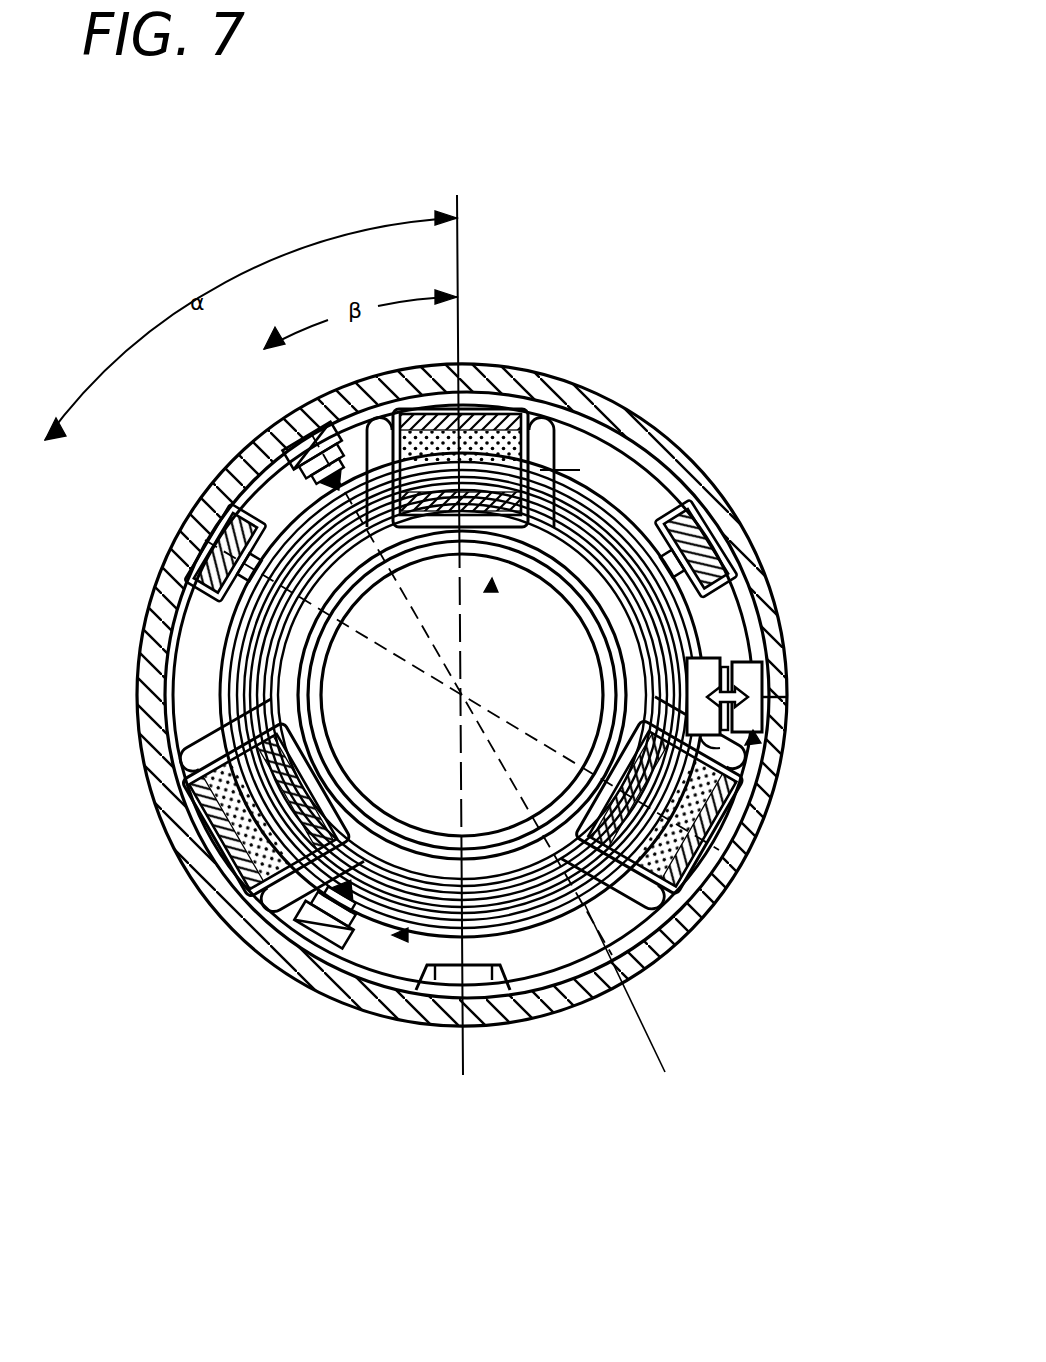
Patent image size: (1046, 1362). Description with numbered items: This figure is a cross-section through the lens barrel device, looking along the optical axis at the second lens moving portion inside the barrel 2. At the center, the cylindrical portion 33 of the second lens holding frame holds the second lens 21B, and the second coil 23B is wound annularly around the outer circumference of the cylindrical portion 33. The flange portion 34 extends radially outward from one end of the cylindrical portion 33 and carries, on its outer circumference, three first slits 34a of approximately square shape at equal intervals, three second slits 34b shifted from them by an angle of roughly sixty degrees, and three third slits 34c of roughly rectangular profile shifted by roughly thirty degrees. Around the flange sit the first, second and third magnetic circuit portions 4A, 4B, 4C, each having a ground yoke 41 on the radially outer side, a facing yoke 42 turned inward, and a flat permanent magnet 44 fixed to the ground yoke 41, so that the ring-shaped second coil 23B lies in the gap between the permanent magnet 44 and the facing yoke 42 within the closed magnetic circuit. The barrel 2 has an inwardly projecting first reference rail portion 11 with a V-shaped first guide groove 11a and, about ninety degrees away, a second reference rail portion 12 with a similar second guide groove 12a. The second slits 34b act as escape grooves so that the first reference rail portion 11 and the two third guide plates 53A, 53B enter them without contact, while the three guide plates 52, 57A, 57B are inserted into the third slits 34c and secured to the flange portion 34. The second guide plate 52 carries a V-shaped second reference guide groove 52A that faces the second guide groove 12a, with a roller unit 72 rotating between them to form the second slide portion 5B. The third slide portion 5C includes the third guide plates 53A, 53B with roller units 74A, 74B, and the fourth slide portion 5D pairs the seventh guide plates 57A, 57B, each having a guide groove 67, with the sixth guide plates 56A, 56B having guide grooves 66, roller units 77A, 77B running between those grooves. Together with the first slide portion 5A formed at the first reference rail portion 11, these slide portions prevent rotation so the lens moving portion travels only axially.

The barrel 2 is at (612, 1008).
The first magnetic circuit portion 4A is at (530, 440).
The second magnetic circuit portion 4B is at (247, 880).
The third magnetic circuit portion 4C is at (692, 900).
The first slide portion 5A is at (510, 985).
The second slide portion 5B is at (757, 740).
The third slide portion 5C is at (674, 460).
The fourth slide portion 5D is at (492, 582).
The first reference rail portion 11 is at (472, 985).
The first guide groove 11a is at (452, 972).
The second reference rail portion 12 is at (744, 666).
The second guide groove 12a is at (770, 712).
The second lens 21B is at (240, 730).
The second coil 23B is at (577, 472).
The cylindrical portion 33 is at (305, 706).
The flange portion 34 is at (250, 663).
The first slit 34a is at (545, 470).
The second slit 34b is at (700, 487).
The third slit 34c is at (878, 858).
The ground yoke 41 is at (458, 408).
The facing yoke 42 is at (504, 445).
The permanent magnet 44 is at (474, 420).
The second guide plate 52 is at (722, 660).
The second reference guide groove 52A is at (733, 690).
The third guide plate 53A is at (213, 548).
The third guide plate 53B is at (737, 566).
The sixth guide plate 56A is at (312, 935).
The sixth guide plate 56B is at (337, 435).
The seventh guide plate 57A is at (302, 930).
The seventh guide plate 57B is at (287, 460).
The guide groove 66 is at (370, 420).
The guide groove 67 is at (322, 462).
The roller unit 72 is at (745, 745).
The roller unit 74A is at (210, 572).
The roller unit 74B is at (728, 540).
The roller unit 77A is at (352, 1000).
The roller unit 77B is at (302, 452).